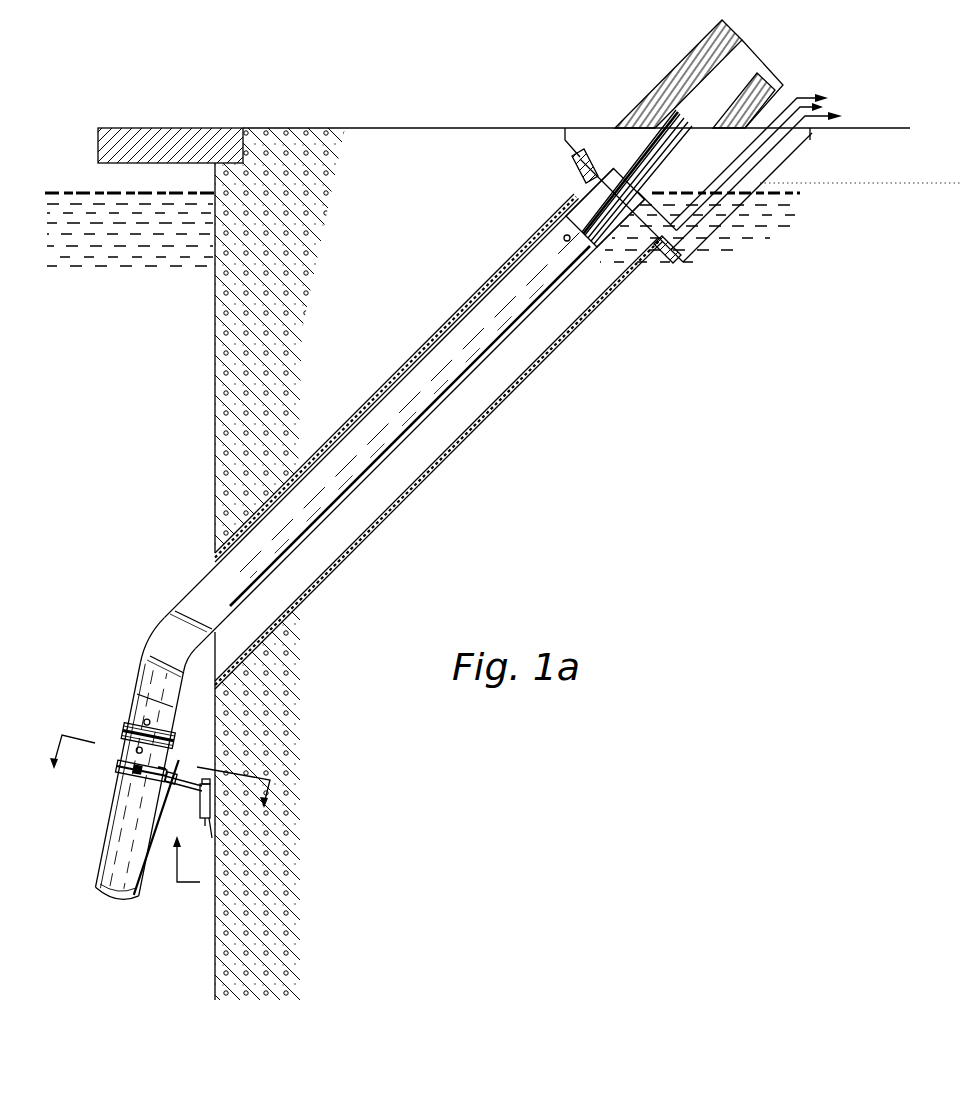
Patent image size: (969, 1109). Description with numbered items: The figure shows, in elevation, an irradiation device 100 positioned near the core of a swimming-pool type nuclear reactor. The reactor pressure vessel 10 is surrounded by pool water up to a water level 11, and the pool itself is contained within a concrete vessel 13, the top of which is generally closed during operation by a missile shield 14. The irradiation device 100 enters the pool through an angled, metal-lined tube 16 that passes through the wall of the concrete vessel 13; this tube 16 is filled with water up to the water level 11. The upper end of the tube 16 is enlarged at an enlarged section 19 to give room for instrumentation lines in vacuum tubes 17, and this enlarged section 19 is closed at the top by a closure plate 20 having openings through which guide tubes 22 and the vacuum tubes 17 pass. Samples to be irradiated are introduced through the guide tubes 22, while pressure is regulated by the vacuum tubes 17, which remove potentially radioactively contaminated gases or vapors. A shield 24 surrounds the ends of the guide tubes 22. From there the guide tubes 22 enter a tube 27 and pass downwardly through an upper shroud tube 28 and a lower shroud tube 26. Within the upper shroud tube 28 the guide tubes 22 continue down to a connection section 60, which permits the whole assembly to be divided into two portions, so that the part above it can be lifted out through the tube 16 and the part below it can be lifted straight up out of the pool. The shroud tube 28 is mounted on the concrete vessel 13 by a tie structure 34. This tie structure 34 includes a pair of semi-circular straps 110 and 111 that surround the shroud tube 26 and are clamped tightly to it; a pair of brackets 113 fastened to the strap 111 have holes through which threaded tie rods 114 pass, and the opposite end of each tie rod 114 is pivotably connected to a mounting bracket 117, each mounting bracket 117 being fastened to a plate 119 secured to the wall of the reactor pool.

The reactor pressure vessel 10 is at (161, 784).
The water level 11 is at (65, 192).
The concrete vessel 13 is at (492, 128).
The missile shield 14 is at (229, 128).
The tube 16 is at (338, 571).
The vacuum tubes 17 is at (704, 214).
The enlarged section 19 is at (742, 208).
The closure plate 20 is at (578, 127).
The guide tubes 22 is at (700, 108).
The shield 24 is at (727, 25).
The lower shroud tube 26 is at (111, 812).
The tube 27 is at (598, 230).
The upper shroud tube 28 is at (378, 395).
The tie structure 34 is at (191, 860).
The connection section 60 is at (111, 733).
The irradiation device 100 is at (111, 690).
The semi-circular strap 110 is at (119, 768).
The semi-circular strap 111 is at (166, 776).
The brackets 113 is at (178, 773).
The tie rods 114 is at (174, 791).
The mounting bracket 117 is at (207, 806).
The plate 119 is at (214, 830).